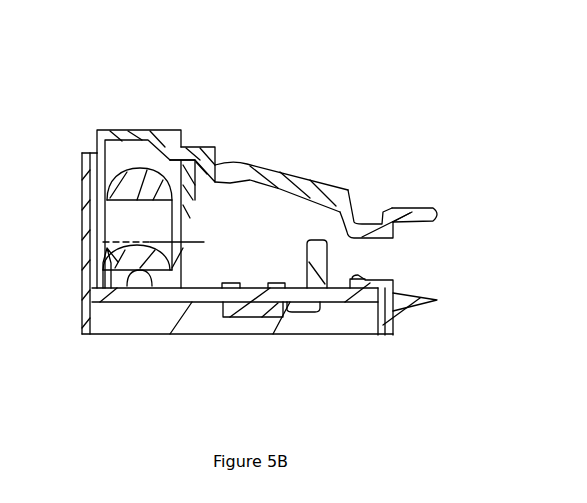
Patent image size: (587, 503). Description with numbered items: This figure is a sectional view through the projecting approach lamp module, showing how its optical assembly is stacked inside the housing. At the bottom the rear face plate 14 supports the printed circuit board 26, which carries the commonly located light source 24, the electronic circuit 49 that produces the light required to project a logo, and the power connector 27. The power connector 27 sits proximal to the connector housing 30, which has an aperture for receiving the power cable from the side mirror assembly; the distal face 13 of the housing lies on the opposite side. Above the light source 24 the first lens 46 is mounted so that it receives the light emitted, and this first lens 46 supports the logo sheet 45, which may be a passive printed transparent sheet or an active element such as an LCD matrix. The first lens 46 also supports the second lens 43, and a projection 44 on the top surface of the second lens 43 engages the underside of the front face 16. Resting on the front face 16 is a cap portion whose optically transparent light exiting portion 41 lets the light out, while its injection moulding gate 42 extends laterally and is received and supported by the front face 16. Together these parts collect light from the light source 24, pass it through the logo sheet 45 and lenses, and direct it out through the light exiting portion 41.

The distal face 13 is at (86, 285).
The rear face plate 14 is at (324, 345).
The front face 16 is at (275, 155).
The light source 24 is at (136, 293).
The printed circuit board 26 is at (187, 311).
The power connector 27 is at (321, 227).
The connector housing 30 is at (420, 204).
The light exiting portion 41 is at (134, 124).
The injection moulding gate 42 is at (206, 144).
The second lens 43 is at (209, 242).
The projection 44 is at (186, 178).
The logo sheet 45 is at (213, 249).
The first lens 46 is at (97, 257).
The electronic circuit 49 is at (244, 326).